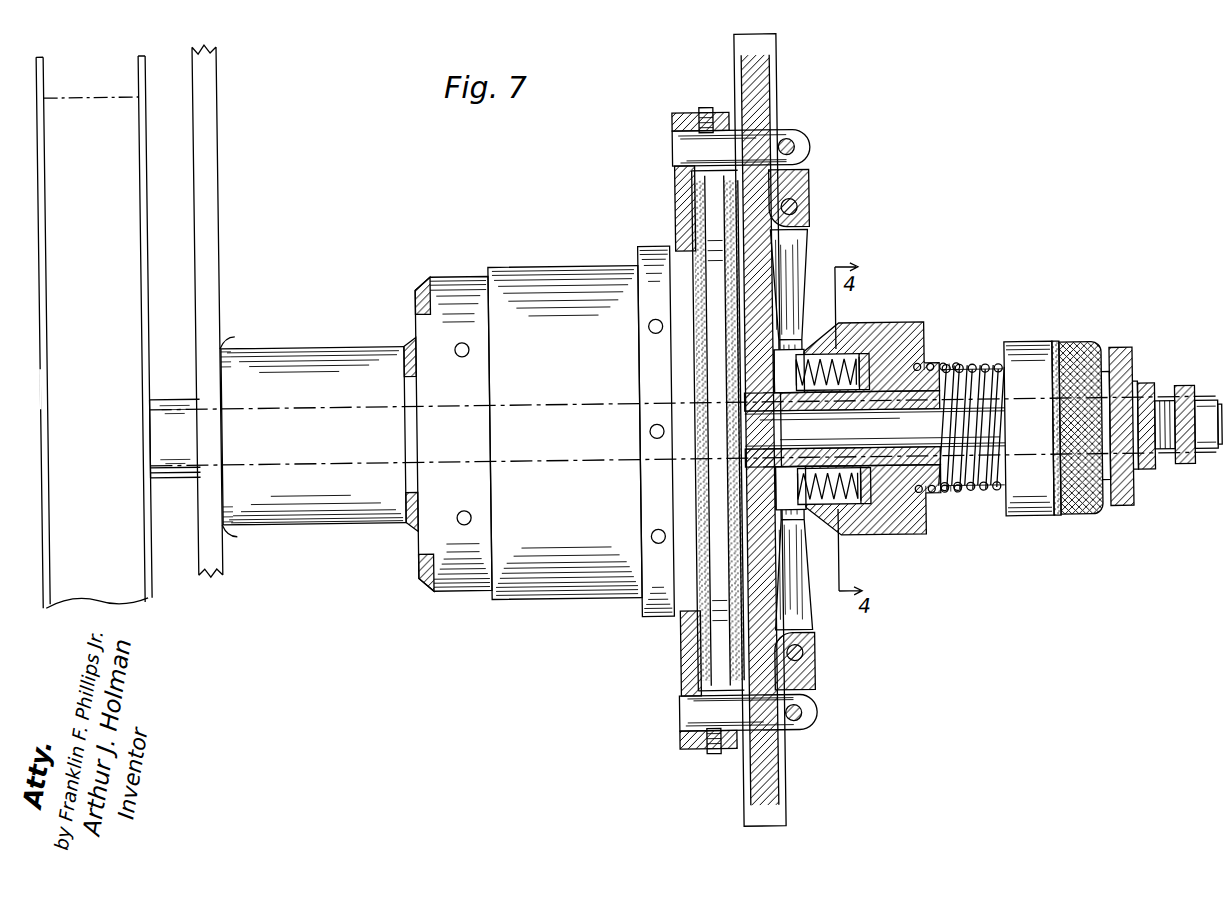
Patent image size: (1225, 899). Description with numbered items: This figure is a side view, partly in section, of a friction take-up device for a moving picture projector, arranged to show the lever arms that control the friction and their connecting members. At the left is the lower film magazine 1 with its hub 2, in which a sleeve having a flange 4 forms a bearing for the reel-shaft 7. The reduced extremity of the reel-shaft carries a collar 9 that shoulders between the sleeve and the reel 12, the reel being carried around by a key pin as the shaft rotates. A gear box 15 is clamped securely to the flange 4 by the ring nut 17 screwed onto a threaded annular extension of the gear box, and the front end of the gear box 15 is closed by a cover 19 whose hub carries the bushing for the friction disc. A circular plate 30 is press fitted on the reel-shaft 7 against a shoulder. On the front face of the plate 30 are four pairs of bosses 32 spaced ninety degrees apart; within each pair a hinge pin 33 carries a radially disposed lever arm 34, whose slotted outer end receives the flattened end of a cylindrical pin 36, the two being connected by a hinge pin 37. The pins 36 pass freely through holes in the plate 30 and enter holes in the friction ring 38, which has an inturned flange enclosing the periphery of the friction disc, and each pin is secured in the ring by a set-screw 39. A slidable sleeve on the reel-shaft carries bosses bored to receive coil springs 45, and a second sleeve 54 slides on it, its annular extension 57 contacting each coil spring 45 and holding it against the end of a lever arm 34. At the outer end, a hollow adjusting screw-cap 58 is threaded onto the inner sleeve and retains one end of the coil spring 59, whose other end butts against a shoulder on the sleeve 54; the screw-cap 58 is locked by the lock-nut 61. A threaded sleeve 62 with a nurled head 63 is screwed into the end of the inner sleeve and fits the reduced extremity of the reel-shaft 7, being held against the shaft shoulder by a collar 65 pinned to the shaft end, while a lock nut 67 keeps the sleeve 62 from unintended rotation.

The lower film magazine 1 is at (217, 327).
The hub 2 is at (318, 348).
The flange 4 is at (410, 337).
The reel-shaft 7 is at (292, 458).
The collar 9 is at (173, 393).
The reel 12 is at (135, 541).
The gear box 15 is at (542, 270).
The ring nut 17 is at (455, 287).
The cover 19 is at (654, 246).
The circular plate 30 is at (765, 793).
The bosses 32 is at (806, 212).
The hinge pin 33 is at (800, 200).
The lever arm 34 is at (806, 262).
The cylindrical pin 36 is at (692, 149).
The hinge pin 37 is at (794, 140).
The friction ring 38 is at (695, 208).
The set-screw 39 is at (709, 106).
The coil spring 45 is at (828, 458).
The sleeve 54 is at (950, 497).
The annular extension 57 is at (878, 352).
The adjusting screw-cap 58 is at (1030, 346).
The coil spring 59 is at (969, 362).
The lock-nut 61 is at (1121, 352).
The threaded sleeve 62 is at (1163, 406).
The nurled head 63 is at (1187, 391).
The collar 65 is at (1206, 456).
The lock nut 67 is at (1146, 388).